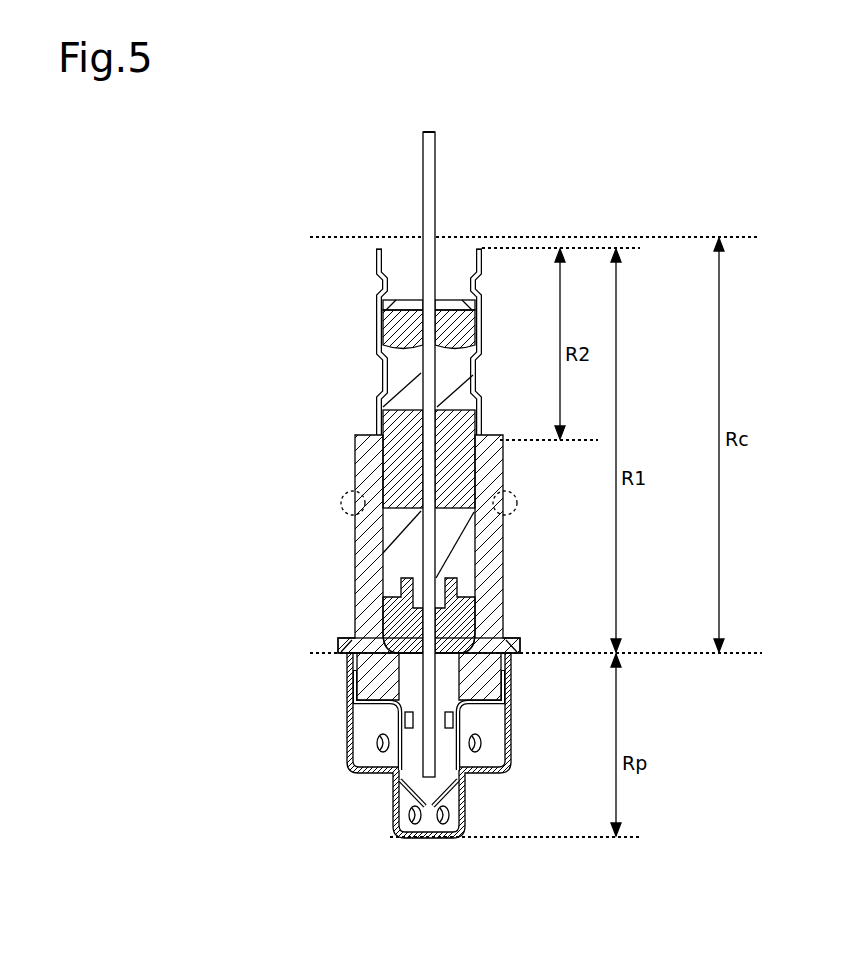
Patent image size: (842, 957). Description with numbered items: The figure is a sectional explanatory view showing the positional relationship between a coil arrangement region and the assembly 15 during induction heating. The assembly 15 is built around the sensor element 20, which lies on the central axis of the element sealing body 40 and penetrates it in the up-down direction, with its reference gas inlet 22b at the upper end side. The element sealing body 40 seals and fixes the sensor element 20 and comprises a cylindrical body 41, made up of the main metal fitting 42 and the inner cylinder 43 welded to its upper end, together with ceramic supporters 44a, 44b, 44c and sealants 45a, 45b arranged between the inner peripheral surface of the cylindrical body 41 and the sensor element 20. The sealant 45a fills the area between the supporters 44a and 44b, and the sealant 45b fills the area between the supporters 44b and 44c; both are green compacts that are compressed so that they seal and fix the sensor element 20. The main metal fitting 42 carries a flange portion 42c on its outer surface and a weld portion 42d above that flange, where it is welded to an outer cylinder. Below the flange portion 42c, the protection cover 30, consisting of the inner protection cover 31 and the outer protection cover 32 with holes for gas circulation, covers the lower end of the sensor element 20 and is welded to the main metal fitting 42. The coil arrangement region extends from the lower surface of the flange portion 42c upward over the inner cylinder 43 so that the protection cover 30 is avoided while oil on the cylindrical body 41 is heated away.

The assembly 15 is at (189, 161).
The sensor element 20 is at (422, 170).
The reference gas inlet 22b is at (426, 132).
The protection cover 30 is at (284, 712).
The inner protection cover 31 is at (398, 727).
The outer protection cover 32 is at (350, 752).
The element sealing body 40 is at (201, 382).
The cylindrical body 41 is at (262, 415).
The main metal fitting 42 is at (368, 453).
The flange portion 42c is at (518, 650).
The weld portion 42d is at (341, 500).
The inner cylinder 43 is at (380, 416).
The supporter 44a is at (398, 628).
The supporter 44b is at (397, 475).
The supporter 44c is at (385, 321).
The sealant 45a is at (398, 557).
The sealant 45b is at (398, 374).